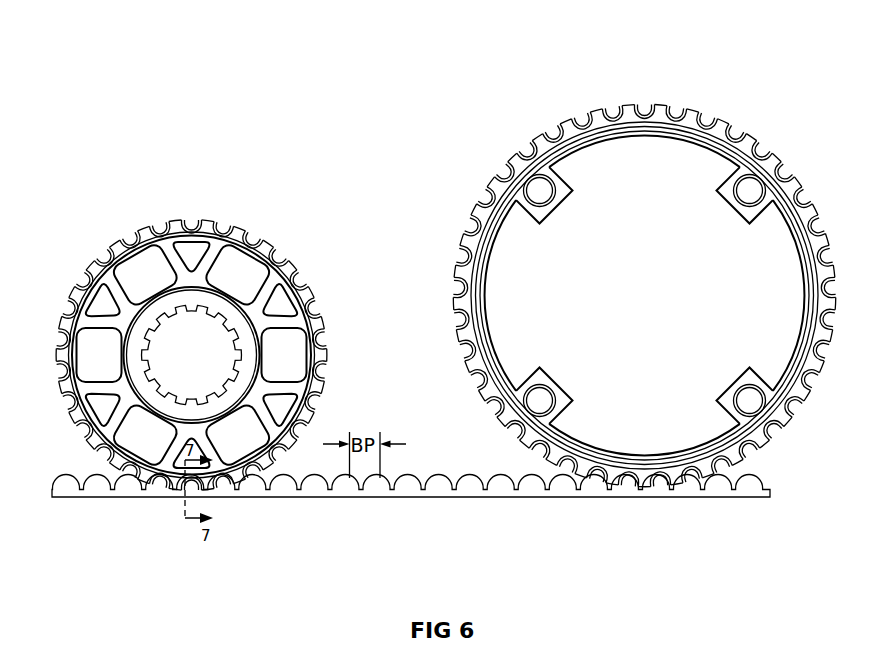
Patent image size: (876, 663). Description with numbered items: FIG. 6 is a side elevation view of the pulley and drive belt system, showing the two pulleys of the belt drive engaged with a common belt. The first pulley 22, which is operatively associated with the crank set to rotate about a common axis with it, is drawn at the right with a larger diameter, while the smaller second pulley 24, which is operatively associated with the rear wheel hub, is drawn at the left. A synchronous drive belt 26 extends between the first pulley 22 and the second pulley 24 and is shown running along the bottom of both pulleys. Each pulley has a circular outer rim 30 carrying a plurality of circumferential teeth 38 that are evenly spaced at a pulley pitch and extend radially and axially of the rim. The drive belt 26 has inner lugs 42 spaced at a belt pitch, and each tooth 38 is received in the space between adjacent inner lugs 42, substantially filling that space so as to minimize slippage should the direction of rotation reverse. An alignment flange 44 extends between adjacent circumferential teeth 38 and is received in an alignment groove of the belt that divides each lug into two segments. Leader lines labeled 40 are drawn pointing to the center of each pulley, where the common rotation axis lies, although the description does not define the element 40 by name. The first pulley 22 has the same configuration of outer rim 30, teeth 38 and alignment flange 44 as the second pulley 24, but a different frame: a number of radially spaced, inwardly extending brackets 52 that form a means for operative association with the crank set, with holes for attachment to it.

The first pulley 22 is at (606, 257).
The second pulley 24 is at (399, 310).
The synchronous drive belt 26 is at (411, 519).
The circular outer rim 30 is at (478, 270).
The circumferential teeth 38 is at (570, 122).
The central bore / axis opening 40 is at (193, 357).
The inner lugs 42 is at (287, 480).
The alignment flange 44 is at (516, 140).
The brackets 52 is at (562, 188).